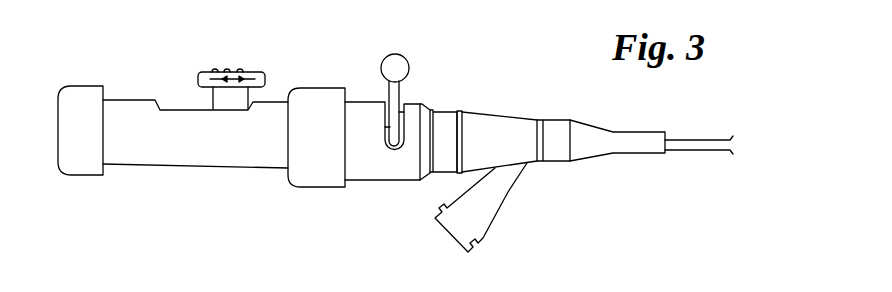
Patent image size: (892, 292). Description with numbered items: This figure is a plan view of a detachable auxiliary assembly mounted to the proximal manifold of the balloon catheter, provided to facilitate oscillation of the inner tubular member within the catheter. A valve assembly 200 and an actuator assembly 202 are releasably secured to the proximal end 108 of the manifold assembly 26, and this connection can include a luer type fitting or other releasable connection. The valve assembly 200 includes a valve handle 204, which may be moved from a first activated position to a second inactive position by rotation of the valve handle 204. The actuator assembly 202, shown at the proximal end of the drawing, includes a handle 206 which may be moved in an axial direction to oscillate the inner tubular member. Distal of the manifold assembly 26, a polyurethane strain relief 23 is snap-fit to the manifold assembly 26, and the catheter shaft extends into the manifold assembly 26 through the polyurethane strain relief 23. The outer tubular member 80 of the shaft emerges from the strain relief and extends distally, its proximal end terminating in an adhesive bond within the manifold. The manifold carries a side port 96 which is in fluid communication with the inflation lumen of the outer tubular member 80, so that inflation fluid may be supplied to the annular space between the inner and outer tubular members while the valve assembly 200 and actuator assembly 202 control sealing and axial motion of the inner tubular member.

The actuator assembly 202 is at (237, 158).
The handle 206 is at (200, 72).
The valve handle 204 is at (386, 64).
The valve assembly 200 is at (399, 172).
The proximal end of the manifold 108 is at (460, 110).
The manifold assembly 26 is at (503, 123).
The polyurethane strain relief 23 is at (588, 133).
The outer tubular member 80 is at (682, 141).
The side port 96 is at (458, 227).